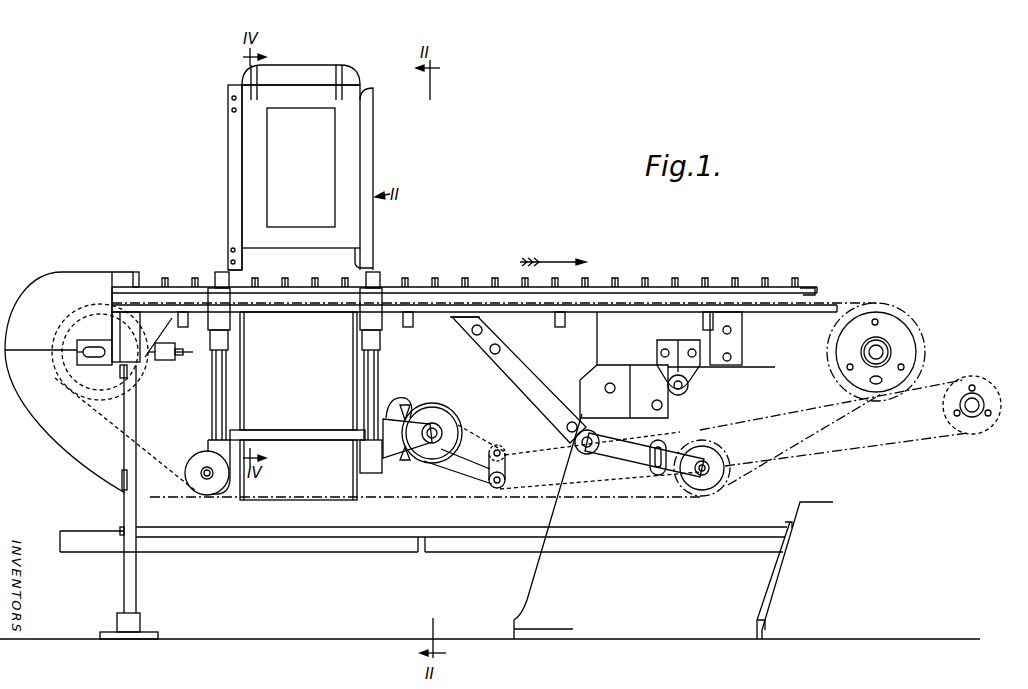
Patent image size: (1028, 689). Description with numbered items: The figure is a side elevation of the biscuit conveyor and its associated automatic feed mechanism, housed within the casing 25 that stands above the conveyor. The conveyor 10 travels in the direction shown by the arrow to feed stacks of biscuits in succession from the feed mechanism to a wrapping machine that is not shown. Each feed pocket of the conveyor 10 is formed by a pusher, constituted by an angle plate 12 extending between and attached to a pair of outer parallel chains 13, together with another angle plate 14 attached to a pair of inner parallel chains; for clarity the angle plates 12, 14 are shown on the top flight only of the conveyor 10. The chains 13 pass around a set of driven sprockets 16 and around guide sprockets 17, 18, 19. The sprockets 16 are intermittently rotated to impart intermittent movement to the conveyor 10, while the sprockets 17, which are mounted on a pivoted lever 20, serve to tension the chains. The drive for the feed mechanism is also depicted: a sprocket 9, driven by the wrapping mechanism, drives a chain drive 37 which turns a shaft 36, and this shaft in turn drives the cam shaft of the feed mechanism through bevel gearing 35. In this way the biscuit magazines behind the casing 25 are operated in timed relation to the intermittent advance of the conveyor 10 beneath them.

The sprocket 9 is at (972, 380).
The conveyor 10 is at (620, 284).
The angle plate 12 is at (470, 283).
The outer parallel chains 13 is at (842, 303).
The angle plate 14 is at (463, 283).
The driven sprockets 16 is at (898, 334).
The guide sprockets 17 is at (704, 488).
The guide sprocket 18 is at (210, 485).
The guide sprocket 19 is at (73, 371).
The pivoted lever 20 is at (624, 452).
The casing 25 is at (350, 143).
The bevel gearing 35 is at (405, 416).
The shaft 36 is at (437, 428).
The chain drive 37 is at (903, 436).